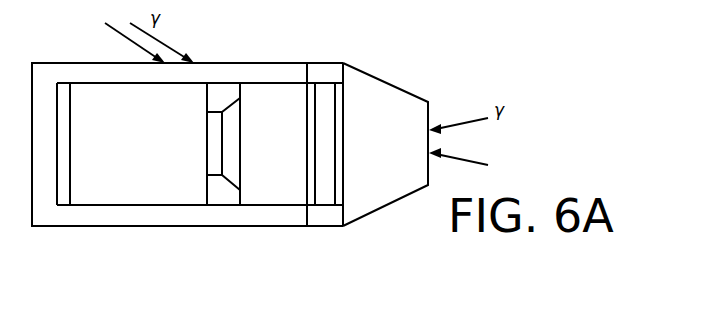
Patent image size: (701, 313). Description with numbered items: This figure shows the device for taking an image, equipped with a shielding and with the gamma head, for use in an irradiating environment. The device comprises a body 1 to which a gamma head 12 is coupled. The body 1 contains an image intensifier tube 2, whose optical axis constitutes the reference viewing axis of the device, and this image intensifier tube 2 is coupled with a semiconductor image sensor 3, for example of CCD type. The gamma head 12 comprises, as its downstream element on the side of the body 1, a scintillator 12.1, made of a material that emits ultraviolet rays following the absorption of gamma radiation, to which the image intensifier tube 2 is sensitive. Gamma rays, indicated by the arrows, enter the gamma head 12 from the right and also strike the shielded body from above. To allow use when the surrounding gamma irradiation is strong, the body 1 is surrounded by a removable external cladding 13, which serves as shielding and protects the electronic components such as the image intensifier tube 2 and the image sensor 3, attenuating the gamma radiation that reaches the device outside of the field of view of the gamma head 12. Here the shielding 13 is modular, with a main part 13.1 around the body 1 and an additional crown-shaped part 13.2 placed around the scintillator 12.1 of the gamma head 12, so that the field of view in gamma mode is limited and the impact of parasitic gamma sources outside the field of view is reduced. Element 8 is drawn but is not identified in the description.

The body 1 is at (240, 240).
The image intensifier tube 2 is at (273, 85).
The semiconductor image sensor 3 is at (212, 117).
The window element 8 is at (97, 90).
The gamma head 12 is at (387, 87).
The scintillator 12.1 is at (328, 182).
The removable external cladding 13 is at (128, 232).
The main part 13.1 is at (183, 217).
The additional crown-shaped part 13.2 is at (322, 68).